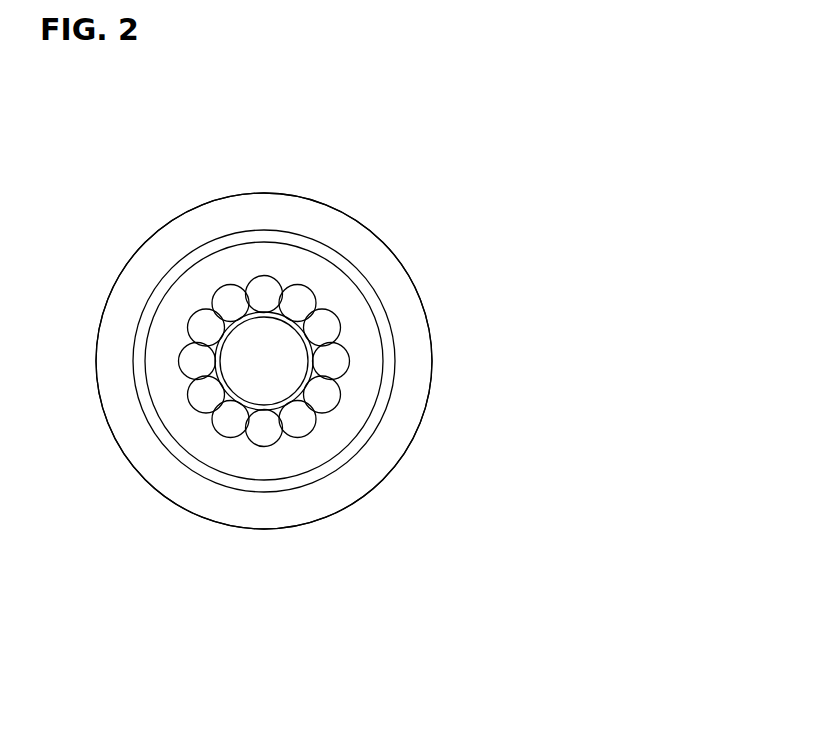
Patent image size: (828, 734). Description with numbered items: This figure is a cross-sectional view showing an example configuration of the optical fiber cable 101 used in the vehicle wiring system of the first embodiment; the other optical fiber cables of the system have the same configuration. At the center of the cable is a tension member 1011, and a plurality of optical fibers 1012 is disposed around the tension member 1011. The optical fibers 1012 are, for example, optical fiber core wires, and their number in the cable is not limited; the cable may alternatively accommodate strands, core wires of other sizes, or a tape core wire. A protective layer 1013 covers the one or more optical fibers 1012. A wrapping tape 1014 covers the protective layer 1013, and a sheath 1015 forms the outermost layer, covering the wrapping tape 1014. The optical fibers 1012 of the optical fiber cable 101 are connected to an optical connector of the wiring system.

The optical fiber cable 101 is at (628, 90).
The tension member 1011 is at (275, 378).
The optical fibers 1012 is at (322, 395).
The protective layer 1013 is at (365, 350).
The wrapping tape 1014 is at (377, 293).
The sheath 1015 is at (362, 223).